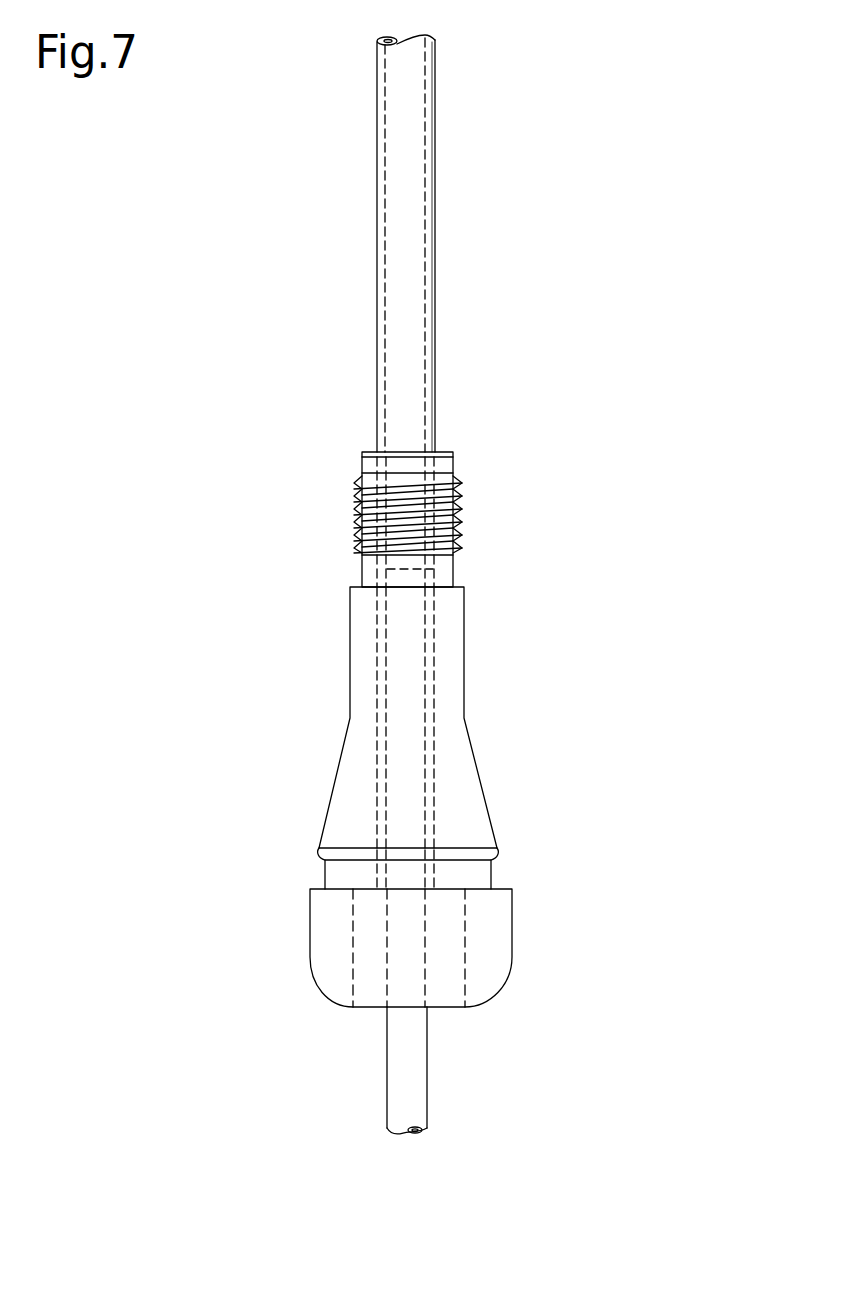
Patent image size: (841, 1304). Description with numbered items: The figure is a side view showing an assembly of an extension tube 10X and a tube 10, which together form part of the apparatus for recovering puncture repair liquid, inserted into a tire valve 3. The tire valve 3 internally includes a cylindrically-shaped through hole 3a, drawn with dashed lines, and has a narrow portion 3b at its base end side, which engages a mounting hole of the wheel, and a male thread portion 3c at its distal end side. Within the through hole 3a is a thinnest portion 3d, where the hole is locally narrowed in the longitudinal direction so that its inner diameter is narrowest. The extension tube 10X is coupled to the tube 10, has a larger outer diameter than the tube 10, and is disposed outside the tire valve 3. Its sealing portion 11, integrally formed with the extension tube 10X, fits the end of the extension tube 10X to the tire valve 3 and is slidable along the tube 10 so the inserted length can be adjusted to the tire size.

The tire valve 3 is at (414, 705).
The through hole 3a is at (418, 650).
The narrow portion 3b is at (495, 872).
The male thread portion 3c is at (462, 504).
The thinnest portion 3d is at (383, 868).
The tube 10 is at (418, 1085).
The extension tube 10X is at (410, 100).
The sealing portion 11 is at (407, 468).